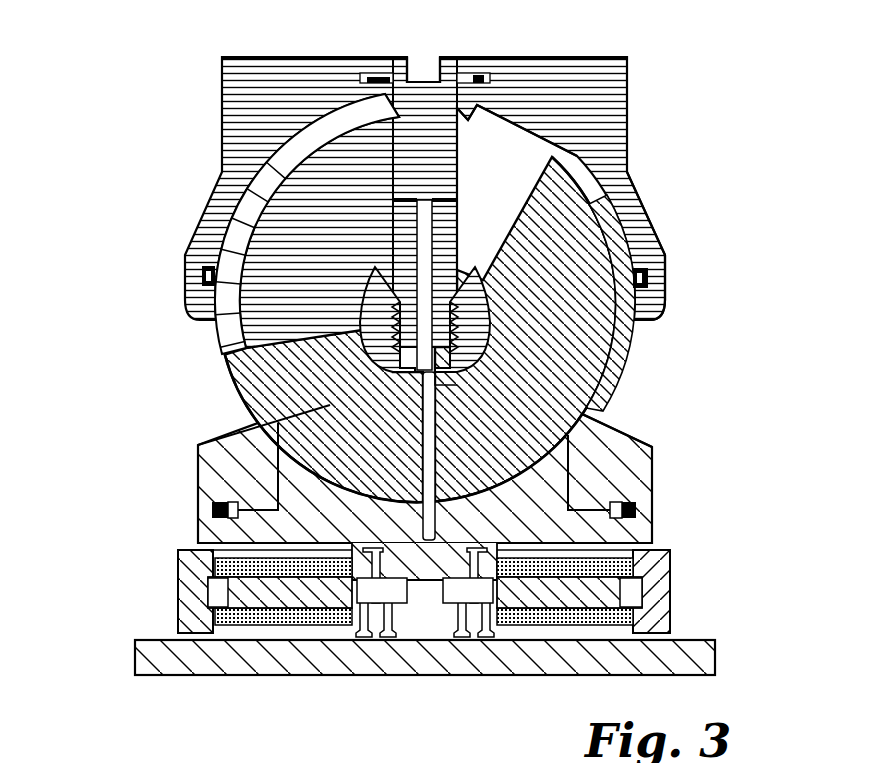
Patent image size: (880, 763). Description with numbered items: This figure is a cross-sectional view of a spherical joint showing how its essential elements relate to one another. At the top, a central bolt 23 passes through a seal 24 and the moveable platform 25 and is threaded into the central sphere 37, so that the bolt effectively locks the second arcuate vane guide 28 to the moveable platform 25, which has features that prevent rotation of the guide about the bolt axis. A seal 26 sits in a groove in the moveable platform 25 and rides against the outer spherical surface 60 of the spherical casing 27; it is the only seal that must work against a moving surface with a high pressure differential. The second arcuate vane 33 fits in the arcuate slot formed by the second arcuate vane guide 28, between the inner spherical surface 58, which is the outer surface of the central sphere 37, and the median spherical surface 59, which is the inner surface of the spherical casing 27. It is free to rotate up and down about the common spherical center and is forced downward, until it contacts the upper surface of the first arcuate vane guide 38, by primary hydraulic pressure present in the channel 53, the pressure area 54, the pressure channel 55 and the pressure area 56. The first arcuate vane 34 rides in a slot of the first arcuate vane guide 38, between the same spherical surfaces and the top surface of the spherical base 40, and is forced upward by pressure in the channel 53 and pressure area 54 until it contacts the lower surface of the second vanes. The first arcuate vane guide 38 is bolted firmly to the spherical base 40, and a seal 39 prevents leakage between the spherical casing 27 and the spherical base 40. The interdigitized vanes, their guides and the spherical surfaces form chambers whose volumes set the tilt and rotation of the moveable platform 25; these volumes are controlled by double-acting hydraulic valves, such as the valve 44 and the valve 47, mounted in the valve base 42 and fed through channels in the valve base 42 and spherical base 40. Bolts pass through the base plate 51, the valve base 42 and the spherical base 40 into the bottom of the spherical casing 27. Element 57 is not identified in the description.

The central bolt 23 is at (425, 113).
The seal 24 is at (490, 67).
The moveable platform 25 is at (262, 118).
The seal 26 is at (653, 283).
The spherical casing 27 is at (240, 393).
The second arcuate vane guide 28 is at (283, 273).
The second arcuate vane 33 is at (575, 300).
The first arcuate vane 34 is at (240, 427).
The central sphere 37 is at (575, 380).
The first arcuate vane guide 38 is at (652, 447).
The seal 39 is at (213, 510).
The spherical base 40 is at (317, 520).
The valve base 42 is at (293, 550).
The hydraulic valve 44 is at (290, 592).
The hydraulic valve 47 is at (593, 593).
The base plate 51 is at (667, 660).
The channel 53 is at (427, 528).
The pressure area 54 is at (465, 458).
The pressure channel 55 is at (423, 200).
The pressure area 56 is at (513, 163).
The support 57 is at (424, 656).
The inner spherical surface 58 is at (475, 293).
The median spherical surface 59 is at (607, 237).
The outer spherical surface 60 is at (660, 253).